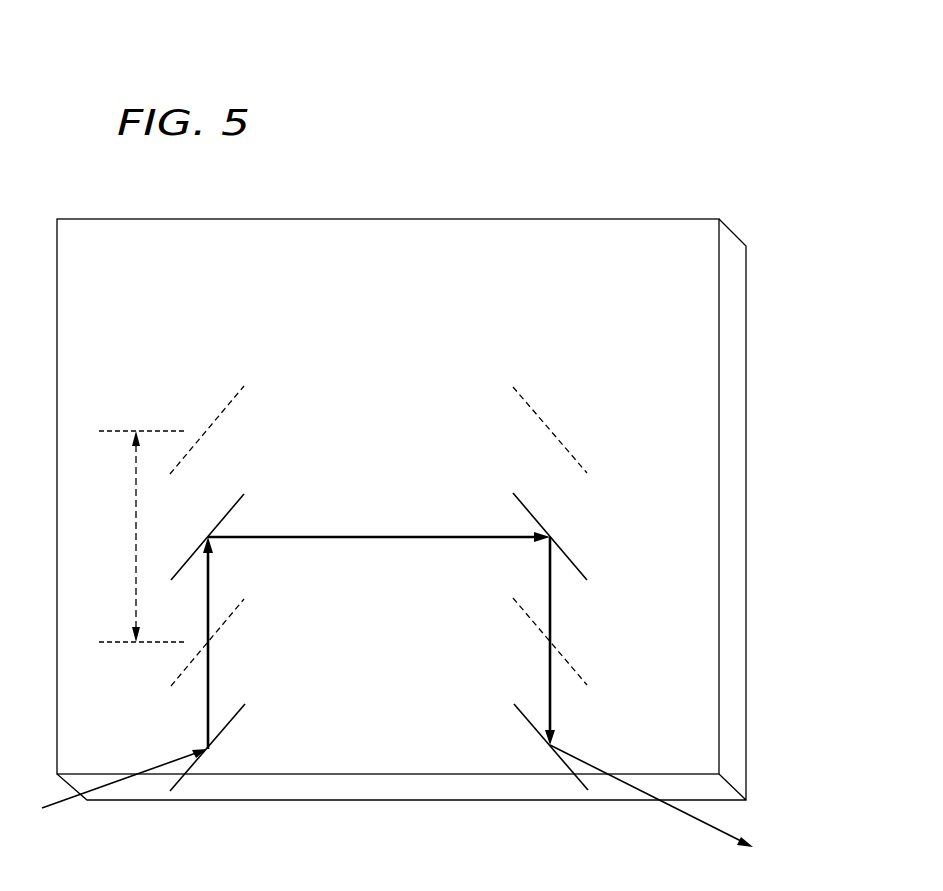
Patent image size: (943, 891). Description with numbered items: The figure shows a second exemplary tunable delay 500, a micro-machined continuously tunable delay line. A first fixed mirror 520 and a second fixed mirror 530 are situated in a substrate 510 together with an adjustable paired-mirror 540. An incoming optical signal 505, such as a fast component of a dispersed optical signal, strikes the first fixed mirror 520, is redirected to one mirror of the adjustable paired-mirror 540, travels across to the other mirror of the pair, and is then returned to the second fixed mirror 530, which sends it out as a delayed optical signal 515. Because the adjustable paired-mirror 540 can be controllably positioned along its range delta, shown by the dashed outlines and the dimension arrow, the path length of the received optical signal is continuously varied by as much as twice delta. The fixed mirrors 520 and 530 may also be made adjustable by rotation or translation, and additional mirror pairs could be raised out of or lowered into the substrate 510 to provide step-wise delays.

The second tunable delay 500 is at (532, 156).
The optical signal 505 is at (58, 806).
The substrate 510 is at (747, 490).
The delayed optical signal 515 is at (693, 822).
The first fixed mirror 520 is at (230, 725).
The second fixed mirror 530 is at (528, 726).
The adjustable paired-mirror 540 is at (230, 517).